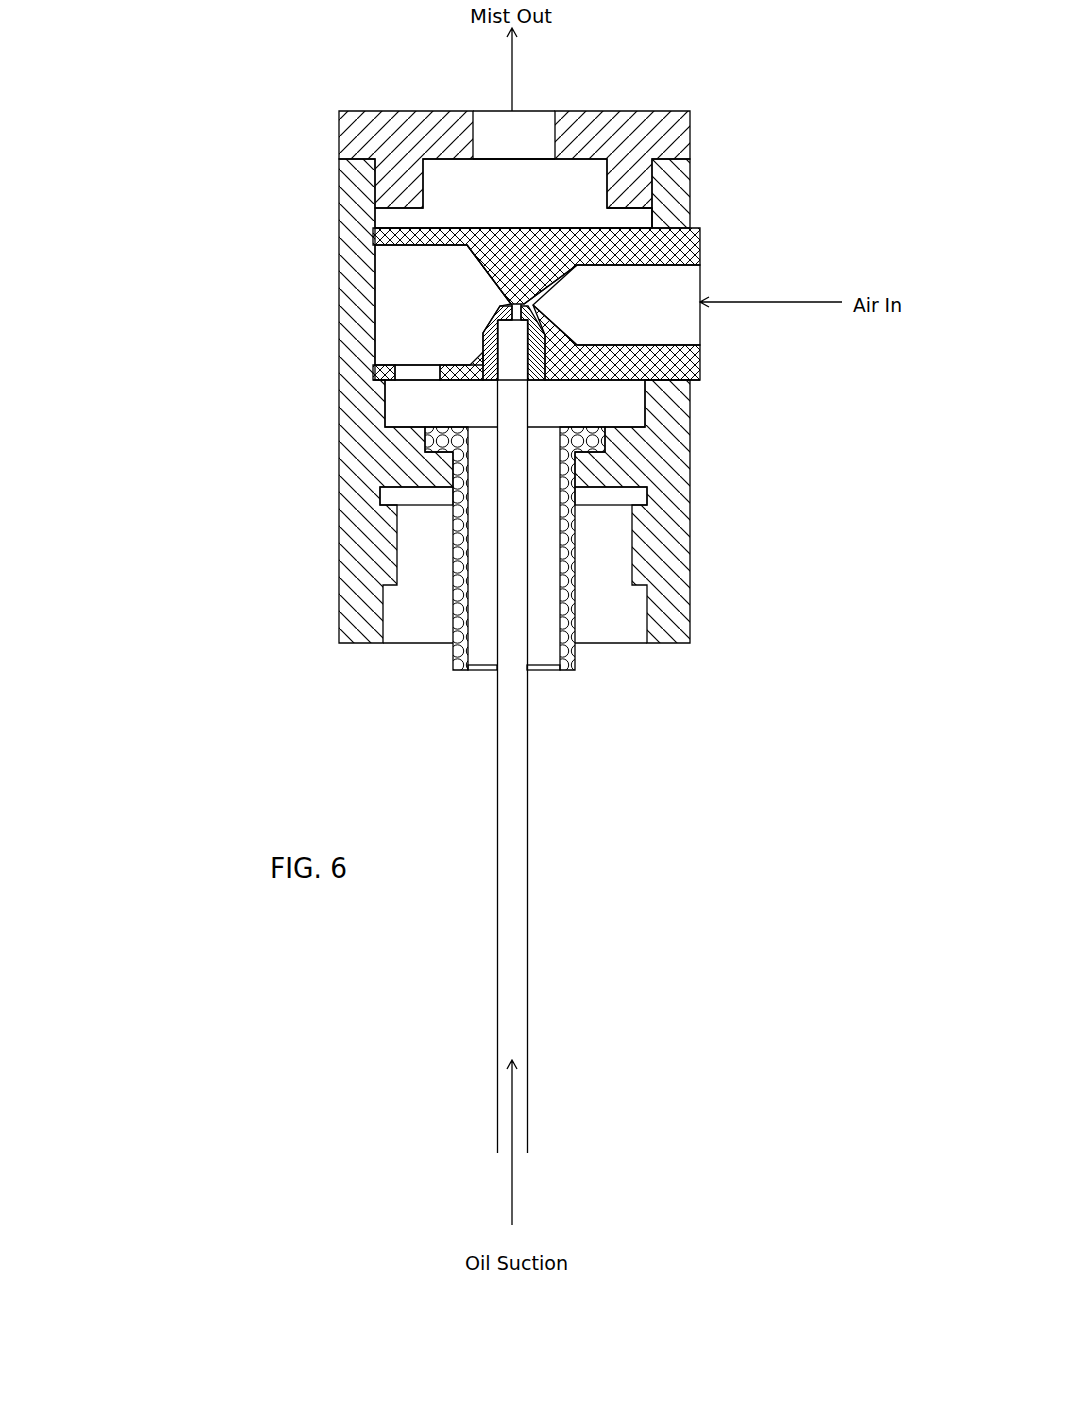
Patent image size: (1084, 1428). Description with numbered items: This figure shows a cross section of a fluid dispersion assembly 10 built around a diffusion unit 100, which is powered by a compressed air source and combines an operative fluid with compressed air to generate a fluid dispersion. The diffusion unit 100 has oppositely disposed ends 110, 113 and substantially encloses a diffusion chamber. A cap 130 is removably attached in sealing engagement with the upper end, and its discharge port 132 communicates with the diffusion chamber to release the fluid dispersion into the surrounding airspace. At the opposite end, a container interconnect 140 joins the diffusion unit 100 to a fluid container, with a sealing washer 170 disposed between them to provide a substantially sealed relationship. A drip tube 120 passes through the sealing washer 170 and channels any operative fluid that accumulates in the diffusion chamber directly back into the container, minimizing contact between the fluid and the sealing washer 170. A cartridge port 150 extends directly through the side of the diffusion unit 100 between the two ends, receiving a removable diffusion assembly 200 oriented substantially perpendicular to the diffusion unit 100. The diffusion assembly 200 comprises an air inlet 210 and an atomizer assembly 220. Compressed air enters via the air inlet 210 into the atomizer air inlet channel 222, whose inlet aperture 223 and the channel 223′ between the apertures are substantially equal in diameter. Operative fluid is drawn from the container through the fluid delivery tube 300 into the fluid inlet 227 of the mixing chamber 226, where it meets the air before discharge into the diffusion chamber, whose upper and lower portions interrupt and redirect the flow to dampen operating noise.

The fluid dispersion assembly 10 is at (282, 98).
The diffusion unit 100 is at (299, 488).
The oppositely disposed end 110 is at (310, 633).
The oppositely disposed end 113 is at (278, 153).
The cap 130 is at (651, 110).
The discharge port 132 is at (536, 88).
The cartridge port 150 is at (650, 216).
The sealing washer 170 is at (647, 497).
The container interconnect 140 is at (398, 672).
The diffusion assembly 200 is at (623, 394).
The air inlet 210 is at (698, 288).
The atomizer assembly 220 is at (399, 277).
The atomizer air inlet channel 222 is at (616, 305).
The mixing chamber 226 is at (443, 305).
The inlet aperture 223 is at (548, 304).
The channel 223′ is at (543, 300).
The fluid inlet 227 is at (510, 306).
The drip tube 120 is at (575, 625).
The fluid delivery tube 300 is at (527, 893).